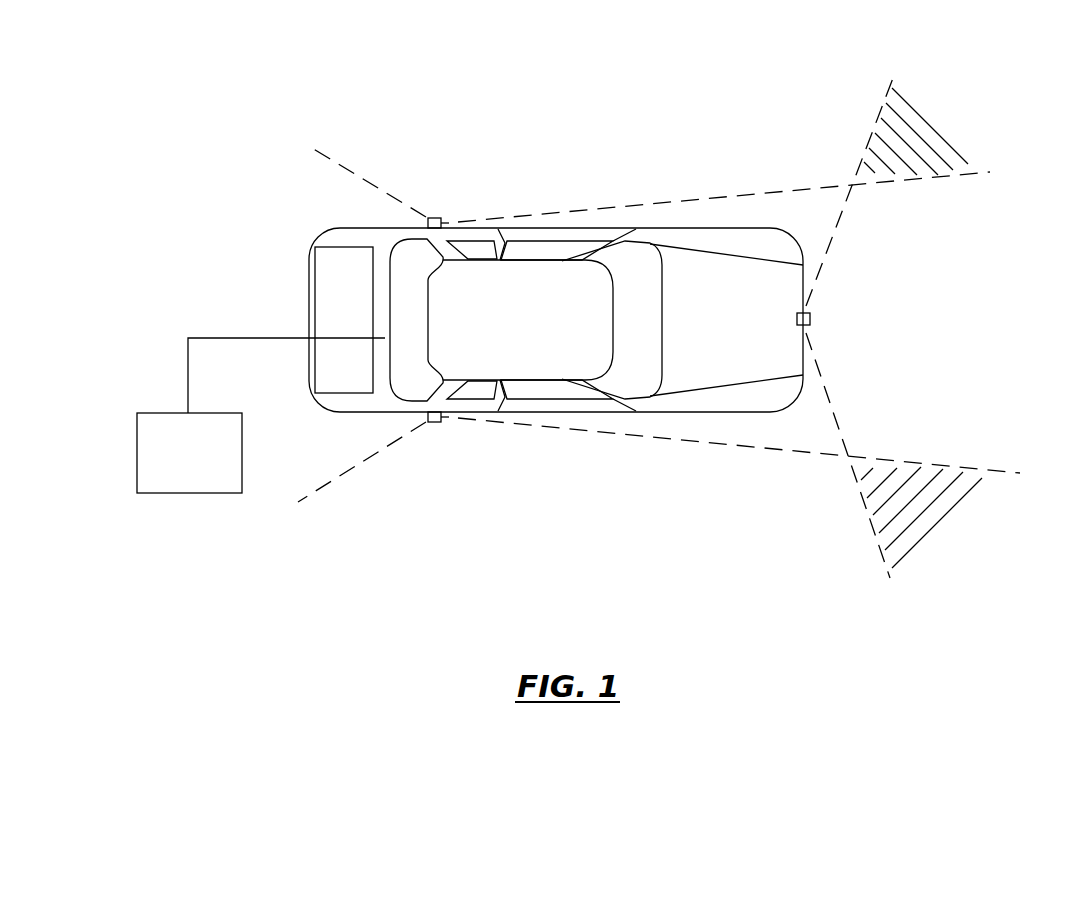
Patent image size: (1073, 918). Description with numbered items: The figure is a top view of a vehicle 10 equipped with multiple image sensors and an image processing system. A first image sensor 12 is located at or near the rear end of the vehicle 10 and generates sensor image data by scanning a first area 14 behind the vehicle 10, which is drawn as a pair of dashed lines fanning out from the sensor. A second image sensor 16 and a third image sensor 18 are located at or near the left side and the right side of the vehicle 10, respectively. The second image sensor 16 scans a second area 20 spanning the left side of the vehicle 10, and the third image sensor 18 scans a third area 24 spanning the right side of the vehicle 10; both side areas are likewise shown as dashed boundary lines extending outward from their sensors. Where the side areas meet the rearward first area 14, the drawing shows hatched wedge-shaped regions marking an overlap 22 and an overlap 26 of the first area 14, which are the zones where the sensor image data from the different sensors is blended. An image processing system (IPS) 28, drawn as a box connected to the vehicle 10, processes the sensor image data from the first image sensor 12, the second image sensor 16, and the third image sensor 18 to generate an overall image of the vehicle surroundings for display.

The vehicle 10 is at (308, 316).
The first image sensor 12 is at (810, 318).
The first area 14 is at (968, 286).
The second image sensor 16 is at (433, 423).
The third image sensor 18 is at (433, 217).
The second area 20 is at (572, 499).
The overlap 22 is at (962, 527).
The third area 24 is at (578, 73).
The overlap 26 is at (940, 103).
The image processing system 28 is at (160, 412).